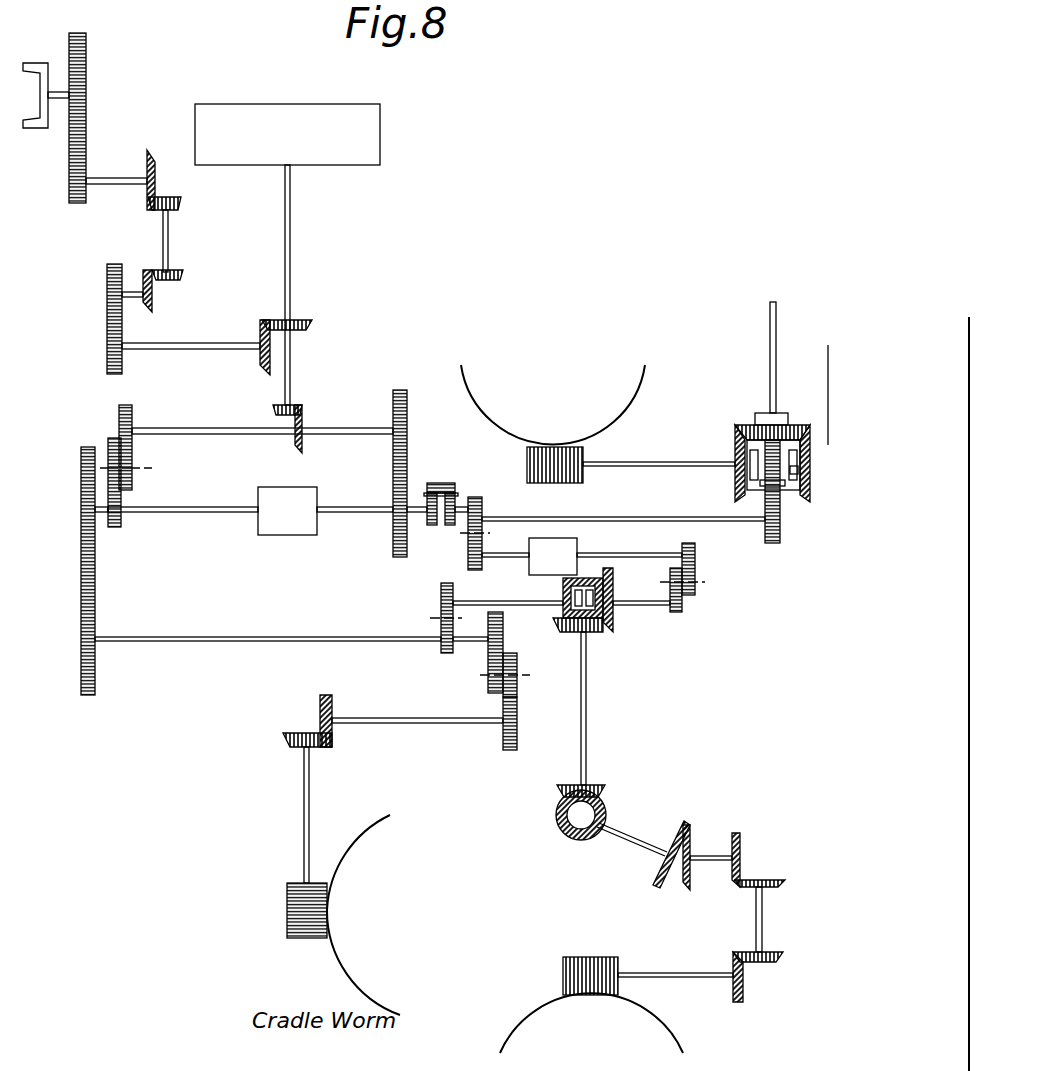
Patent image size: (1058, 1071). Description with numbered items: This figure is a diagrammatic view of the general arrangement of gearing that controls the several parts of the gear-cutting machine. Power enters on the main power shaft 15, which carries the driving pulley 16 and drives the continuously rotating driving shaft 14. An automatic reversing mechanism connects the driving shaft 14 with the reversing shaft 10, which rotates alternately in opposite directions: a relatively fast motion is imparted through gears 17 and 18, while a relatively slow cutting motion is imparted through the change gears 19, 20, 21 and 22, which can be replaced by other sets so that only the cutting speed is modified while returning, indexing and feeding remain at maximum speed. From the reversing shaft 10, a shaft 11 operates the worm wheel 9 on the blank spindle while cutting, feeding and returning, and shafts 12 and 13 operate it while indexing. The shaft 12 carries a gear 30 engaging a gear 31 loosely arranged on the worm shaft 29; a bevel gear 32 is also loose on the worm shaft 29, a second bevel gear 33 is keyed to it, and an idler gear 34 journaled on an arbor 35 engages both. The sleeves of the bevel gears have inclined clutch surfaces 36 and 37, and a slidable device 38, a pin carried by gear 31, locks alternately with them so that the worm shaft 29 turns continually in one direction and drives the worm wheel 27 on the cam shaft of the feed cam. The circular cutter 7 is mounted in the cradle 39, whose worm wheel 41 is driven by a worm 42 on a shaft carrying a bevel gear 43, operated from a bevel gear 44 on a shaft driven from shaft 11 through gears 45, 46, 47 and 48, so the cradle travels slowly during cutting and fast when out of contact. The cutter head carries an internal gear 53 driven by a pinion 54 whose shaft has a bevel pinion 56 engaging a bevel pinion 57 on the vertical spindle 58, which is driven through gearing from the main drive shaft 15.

The circular cutter 7 is at (44, 80).
The internal gear 53 is at (82, 103).
The pinion 54 is at (84, 176).
The bevel pinion 56 is at (157, 186).
The bevel pinion 57 is at (184, 206).
The vertical spindle 58 is at (169, 246).
The driving pulley 16 is at (335, 113).
The main power shaft 15 is at (291, 270).
The driving shaft 14 is at (328, 427).
The change gear 19 is at (121, 406).
The change gear 20 is at (131, 462).
The change gear 21 is at (108, 444).
The change gear 22 is at (123, 503).
The reversing shaft 10 is at (222, 513).
The gear 17 is at (408, 410).
The gear 18 is at (409, 483).
The shaft 12 is at (692, 515).
The shaft 13 is at (640, 548).
The shaft 11 is at (360, 642).
The gear 48 is at (504, 633).
The gear 46 is at (518, 670).
The gear 47 is at (485, 679).
The gear 45 is at (503, 740).
The bevel gear 44 is at (417, 735).
The bevel gear 43 is at (293, 749).
The worm 42 is at (286, 902).
The worm wheel 41 is at (358, 862).
The cradle 39 is at (333, 955).
The worm wheel 27 is at (633, 410).
The worm shaft 29 is at (644, 467).
The arbor 35 is at (777, 363).
The idler gear 34 is at (753, 409).
The gear 31 is at (790, 424).
The clutch surface 37 is at (735, 460).
The clutch surface 36 is at (805, 445).
The bevel gear 33 is at (736, 480).
The gear 30 is at (774, 542).
The slidable device 38 is at (762, 490).
The bevel gear 32 is at (798, 495).
The worm wheel 9 is at (548, 1022).